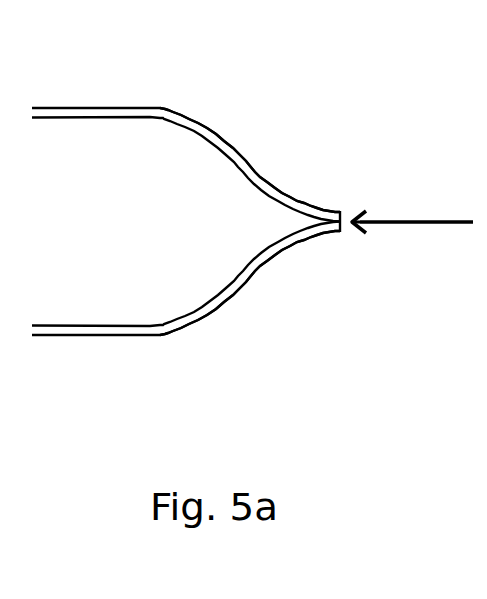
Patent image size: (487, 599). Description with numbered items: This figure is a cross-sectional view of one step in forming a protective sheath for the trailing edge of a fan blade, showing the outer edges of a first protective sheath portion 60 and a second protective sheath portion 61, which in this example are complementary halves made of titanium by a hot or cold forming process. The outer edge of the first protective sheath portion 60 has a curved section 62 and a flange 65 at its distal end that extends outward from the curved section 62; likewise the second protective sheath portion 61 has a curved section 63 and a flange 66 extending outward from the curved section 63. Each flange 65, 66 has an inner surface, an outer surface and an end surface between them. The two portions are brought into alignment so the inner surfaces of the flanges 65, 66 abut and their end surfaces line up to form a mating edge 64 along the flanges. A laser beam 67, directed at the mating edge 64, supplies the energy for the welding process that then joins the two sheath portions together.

The first protective sheath portion 60 is at (96, 102).
The second protective sheath portion 61 is at (89, 343).
The curved section 62 is at (207, 120).
The curved section 63 is at (205, 325).
The mating edge 64 is at (354, 210).
The flange 65 is at (283, 191).
The flange 66 is at (295, 243).
The laser beam 67 is at (390, 223).